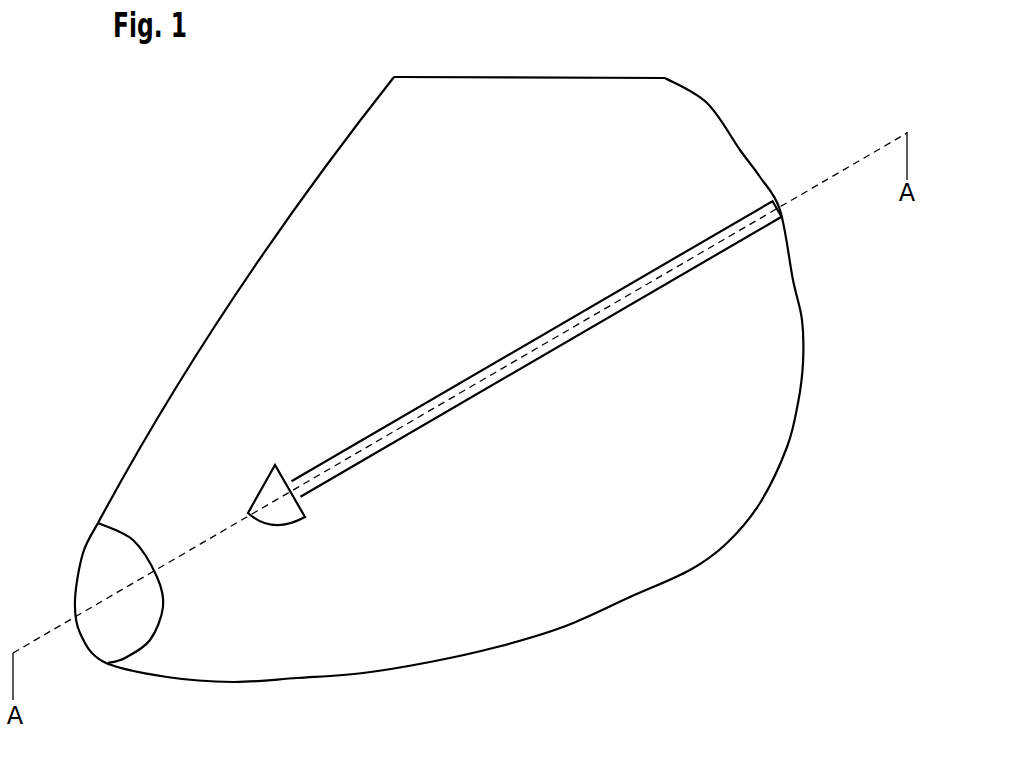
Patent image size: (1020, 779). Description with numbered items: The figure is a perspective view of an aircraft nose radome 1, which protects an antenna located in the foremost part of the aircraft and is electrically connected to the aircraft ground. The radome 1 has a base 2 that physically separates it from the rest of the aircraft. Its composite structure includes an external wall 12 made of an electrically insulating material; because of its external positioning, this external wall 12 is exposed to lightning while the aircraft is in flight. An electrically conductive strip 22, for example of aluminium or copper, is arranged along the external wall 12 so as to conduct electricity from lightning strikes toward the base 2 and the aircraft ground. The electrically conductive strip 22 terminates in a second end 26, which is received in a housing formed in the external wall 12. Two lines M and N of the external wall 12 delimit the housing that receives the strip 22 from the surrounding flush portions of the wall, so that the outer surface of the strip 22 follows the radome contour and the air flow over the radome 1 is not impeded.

The aircraft nose radome 1 is at (439, 371).
The base 2 is at (707, 99).
The external wall 12 is at (445, 249).
The electrically conductive strip 22 is at (580, 299).
The second end 26 is at (259, 478).
The line M is at (741, 210).
The line N is at (762, 238).